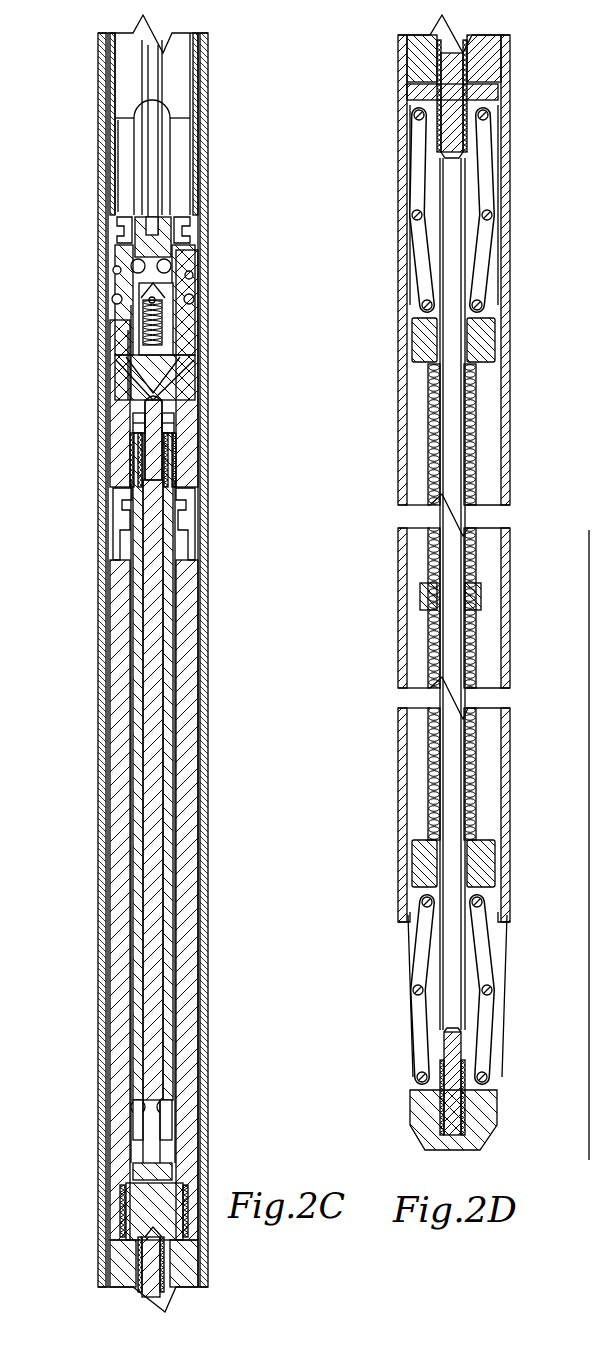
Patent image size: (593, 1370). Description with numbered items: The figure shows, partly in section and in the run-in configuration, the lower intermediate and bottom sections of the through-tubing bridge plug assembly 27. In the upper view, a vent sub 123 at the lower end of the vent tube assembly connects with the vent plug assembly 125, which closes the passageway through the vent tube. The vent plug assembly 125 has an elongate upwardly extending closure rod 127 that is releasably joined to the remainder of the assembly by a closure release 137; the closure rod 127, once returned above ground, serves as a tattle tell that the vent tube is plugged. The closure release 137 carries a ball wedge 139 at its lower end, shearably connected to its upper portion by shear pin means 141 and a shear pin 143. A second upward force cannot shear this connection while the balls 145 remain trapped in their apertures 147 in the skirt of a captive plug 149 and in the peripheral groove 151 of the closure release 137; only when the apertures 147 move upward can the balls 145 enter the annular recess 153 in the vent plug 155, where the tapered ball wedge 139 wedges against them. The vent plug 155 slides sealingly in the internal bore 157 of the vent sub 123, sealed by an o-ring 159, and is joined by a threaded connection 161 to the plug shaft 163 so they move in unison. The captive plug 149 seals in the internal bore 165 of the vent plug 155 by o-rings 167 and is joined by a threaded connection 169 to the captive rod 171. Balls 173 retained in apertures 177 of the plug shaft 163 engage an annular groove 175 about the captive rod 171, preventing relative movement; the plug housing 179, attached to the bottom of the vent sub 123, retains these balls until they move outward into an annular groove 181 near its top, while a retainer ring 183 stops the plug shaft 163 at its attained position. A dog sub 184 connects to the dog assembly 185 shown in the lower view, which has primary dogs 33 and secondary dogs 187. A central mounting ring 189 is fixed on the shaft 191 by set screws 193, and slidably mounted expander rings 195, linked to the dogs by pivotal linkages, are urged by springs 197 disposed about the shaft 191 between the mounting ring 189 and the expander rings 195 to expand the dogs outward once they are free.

In FIG. 2C, the bridge plug assembly 27 is at (233, 78).
In FIG. 2D, the bridge plug assembly 27 is at (532, 78).
In FIG. 2D, the primary dogs 33 is at (418, 962).
In FIG. 2C, the vent sub 123 is at (104, 46).
In FIG. 2C, the vent plug assembly 125 is at (93, 128).
In FIG. 2C, the closure rod 127 is at (150, 78).
In FIG. 2C, the closure release 137 is at (186, 228).
In FIG. 2C, the ball wedge 139 is at (165, 376).
In FIG. 2C, the shear pin means 141 is at (172, 342).
In FIG. 2C, the shear pin 143 is at (160, 300).
In FIG. 2C, the balls 145 is at (182, 240).
In FIG. 2C, the apertures 147 is at (130, 266).
In FIG. 2C, the captive plug 149 is at (115, 405).
In FIG. 2C, the peripheral groove 151 is at (114, 299).
In FIG. 2C, the annular recess 153 is at (118, 240).
In FIG. 2C, the vent plug 155 is at (122, 342).
In FIG. 2C, the internal bore 157 is at (122, 165).
In FIG. 2C, the o-ring 159 is at (129, 310).
In FIG. 2C, the threaded connection 161 is at (132, 470).
In FIG. 2C, the plug shaft 163 is at (170, 582).
In FIG. 2C, the internal bore 165 is at (170, 402).
In FIG. 2C, the o-rings 167 is at (172, 430).
In FIG. 2C, the threaded connection 169 is at (132, 418).
In FIG. 2C, the captive rod 171 is at (165, 640).
In FIG. 2C, the balls 173 is at (170, 1104).
In FIG. 2C, the annular groove 175 is at (136, 1104).
In FIG. 2C, the apertures 177 is at (172, 1110).
In FIG. 2C, the plug housing 179 is at (130, 812).
In FIG. 2C, the annular groove 181 is at (124, 535).
In FIG. 2C, the retainer ring 183 is at (180, 520).
In FIG. 2C, the dog sub 184 is at (200, 1285).
In FIG. 2D, the dog assembly 185 is at (375, 90).
In FIG. 2D, the secondary dogs 187 is at (497, 292).
In FIG. 2D, the central mounting ring 189 is at (424, 596).
In FIG. 2D, the shaft 191 is at (452, 460).
In FIG. 2D, the set screws 193 is at (478, 600).
In FIG. 2D, the expander rings 195 is at (482, 352).
In FIG. 2D, the springs 197 is at (472, 416).